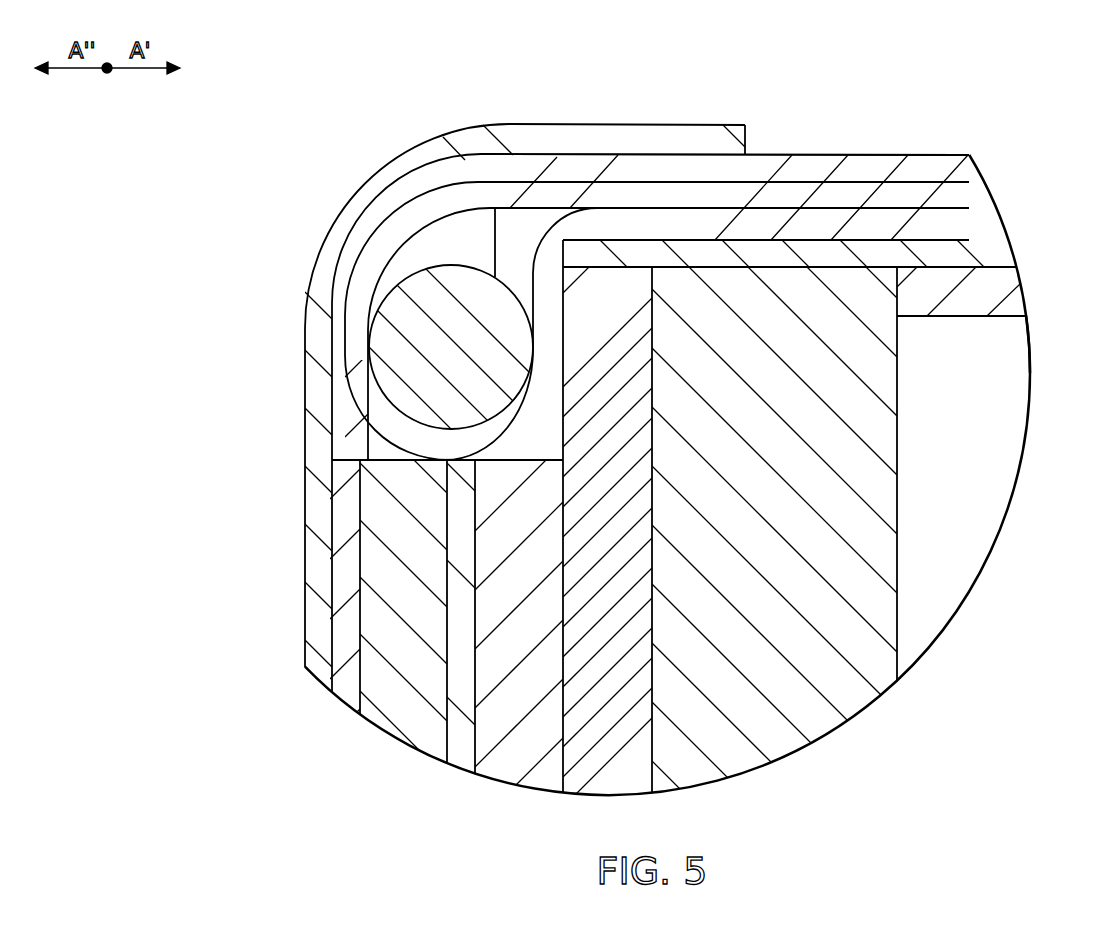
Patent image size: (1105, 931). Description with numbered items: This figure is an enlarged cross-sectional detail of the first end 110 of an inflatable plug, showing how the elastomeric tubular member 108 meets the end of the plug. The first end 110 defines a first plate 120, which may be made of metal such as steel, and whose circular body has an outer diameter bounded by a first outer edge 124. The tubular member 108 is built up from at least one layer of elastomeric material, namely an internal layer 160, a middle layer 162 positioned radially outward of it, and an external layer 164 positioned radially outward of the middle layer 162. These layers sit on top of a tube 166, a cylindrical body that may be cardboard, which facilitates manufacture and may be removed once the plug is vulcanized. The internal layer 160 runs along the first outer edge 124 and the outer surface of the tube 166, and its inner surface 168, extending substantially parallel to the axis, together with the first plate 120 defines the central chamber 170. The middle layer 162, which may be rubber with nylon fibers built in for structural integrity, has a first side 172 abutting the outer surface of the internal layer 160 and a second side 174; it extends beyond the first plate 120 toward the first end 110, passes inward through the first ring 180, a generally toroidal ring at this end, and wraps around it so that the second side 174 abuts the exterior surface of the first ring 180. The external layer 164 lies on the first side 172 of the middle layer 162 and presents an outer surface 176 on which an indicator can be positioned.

The tubular member 108 is at (841, 152).
The first end 110 is at (417, 145).
The first plate 120 is at (694, 539).
The first outer edge 124 is at (726, 268).
The internal layer 160 is at (973, 252).
The middle layer 162 is at (927, 195).
The external layer 164 is at (927, 168).
The tube 166 is at (998, 295).
The inner surface 168 is at (1003, 282).
The central chamber 170 is at (972, 489).
The first side 172 is at (607, 243).
The second side 174 is at (541, 207).
The outer surface 176 is at (890, 155).
The first ring 180 is at (437, 335).